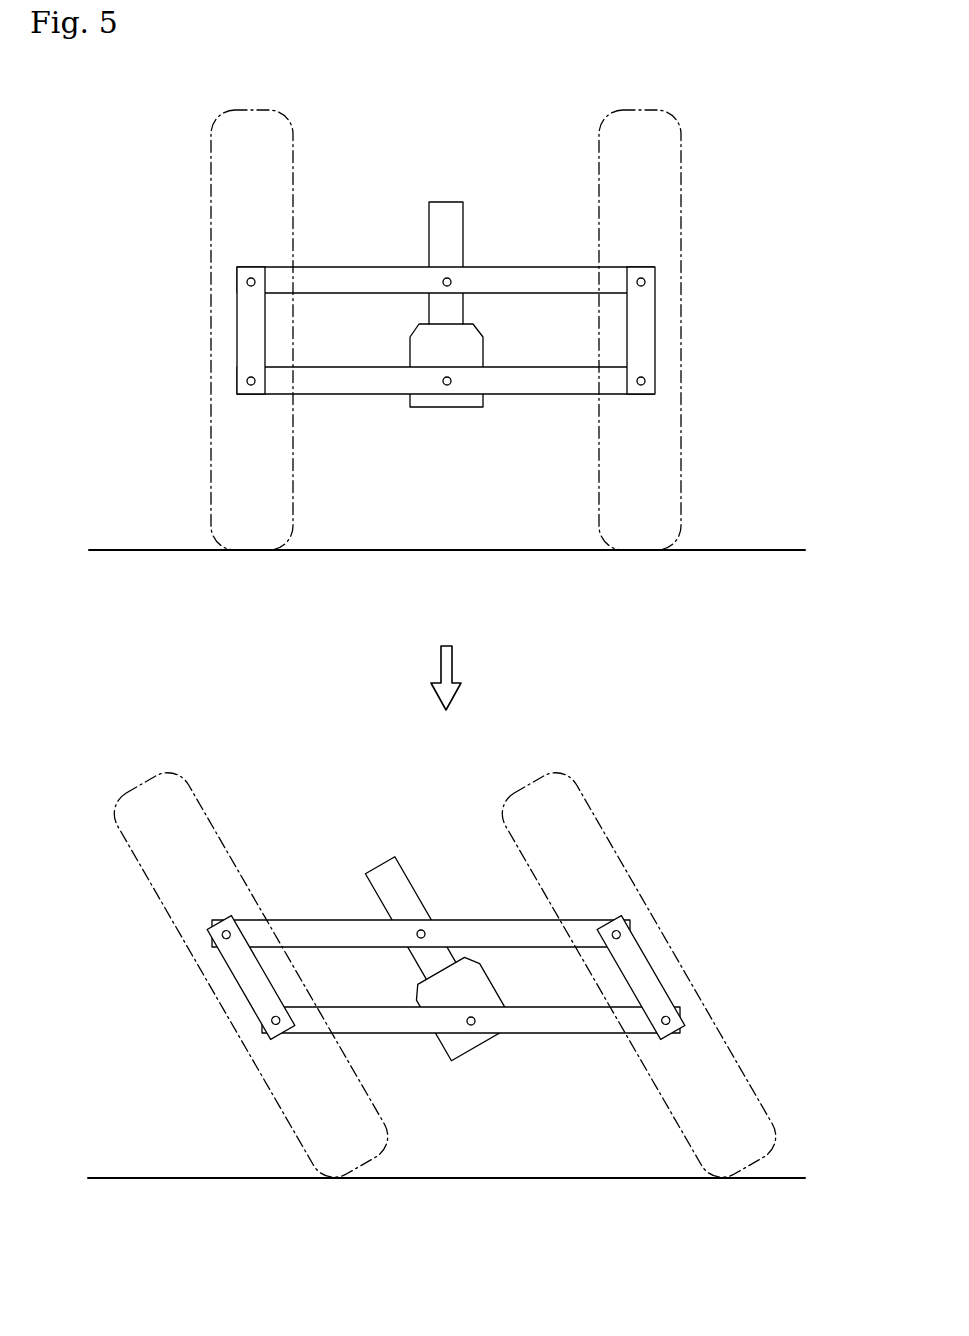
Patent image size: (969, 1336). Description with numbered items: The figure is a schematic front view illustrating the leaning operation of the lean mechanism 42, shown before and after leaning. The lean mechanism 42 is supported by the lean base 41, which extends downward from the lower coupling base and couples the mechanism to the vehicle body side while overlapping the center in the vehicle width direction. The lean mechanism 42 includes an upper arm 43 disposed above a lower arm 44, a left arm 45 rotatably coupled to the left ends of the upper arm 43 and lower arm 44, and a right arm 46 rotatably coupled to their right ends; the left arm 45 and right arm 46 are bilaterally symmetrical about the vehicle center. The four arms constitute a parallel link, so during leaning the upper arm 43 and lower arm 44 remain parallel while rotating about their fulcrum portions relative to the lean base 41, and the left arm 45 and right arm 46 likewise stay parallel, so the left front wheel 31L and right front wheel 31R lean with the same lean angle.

The right front wheel 31R is at (212, 170).
The left front wheel 31L is at (682, 168).
The lean base 41 is at (418, 318).
The lean mechanism 42 is at (449, 601).
The upper arm 43 is at (518, 272).
The lower arm 44 is at (515, 387).
The left arm 45 is at (643, 332).
The right arm 46 is at (250, 333).